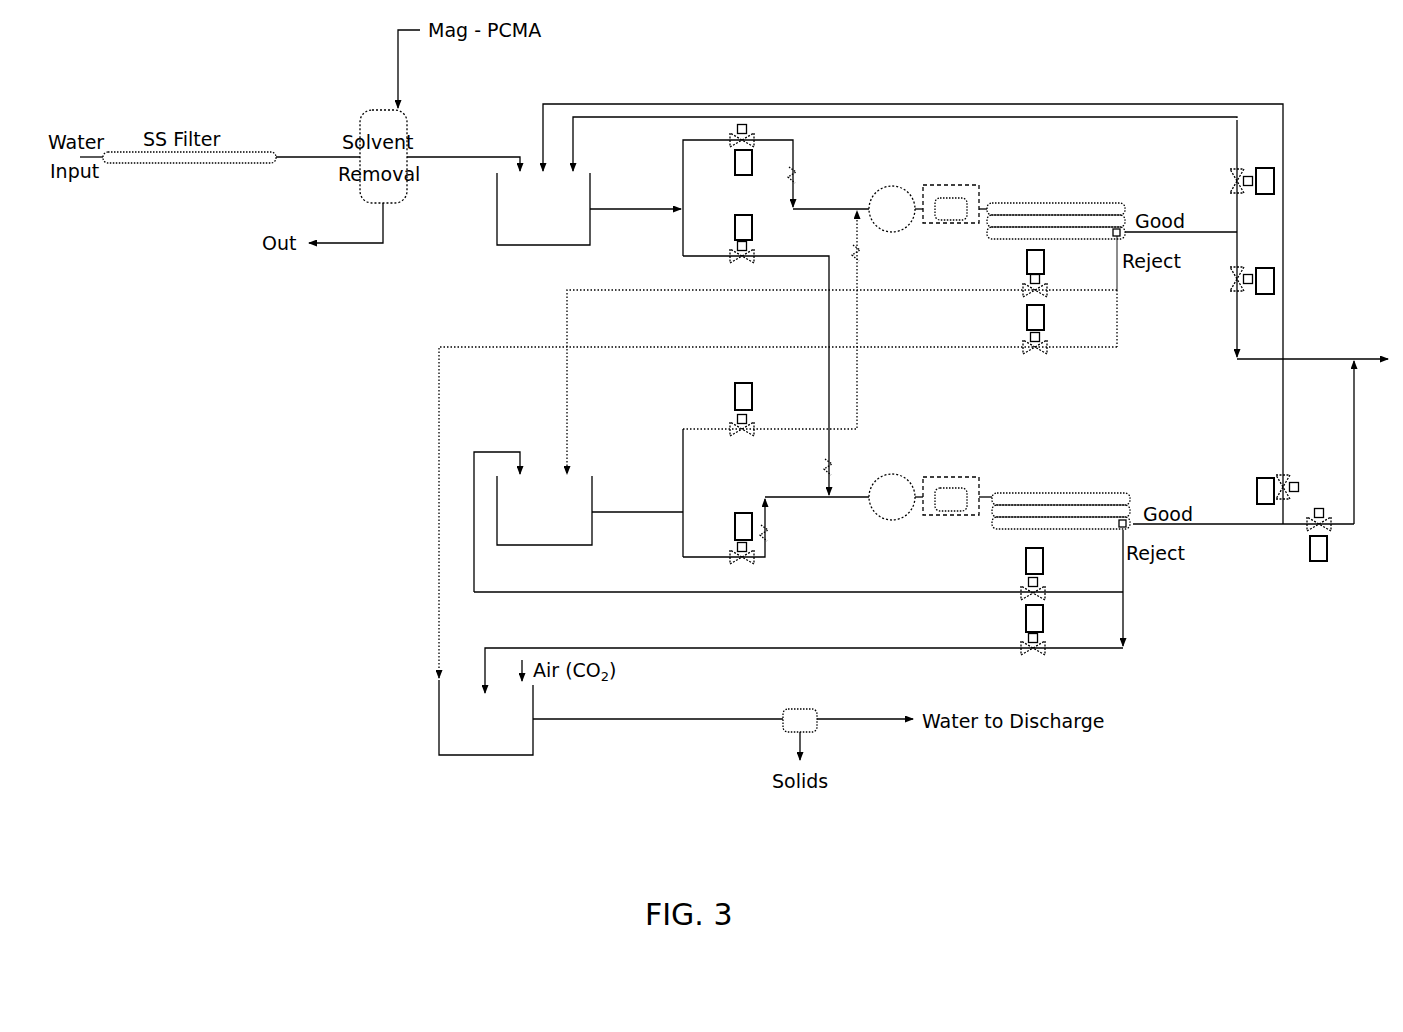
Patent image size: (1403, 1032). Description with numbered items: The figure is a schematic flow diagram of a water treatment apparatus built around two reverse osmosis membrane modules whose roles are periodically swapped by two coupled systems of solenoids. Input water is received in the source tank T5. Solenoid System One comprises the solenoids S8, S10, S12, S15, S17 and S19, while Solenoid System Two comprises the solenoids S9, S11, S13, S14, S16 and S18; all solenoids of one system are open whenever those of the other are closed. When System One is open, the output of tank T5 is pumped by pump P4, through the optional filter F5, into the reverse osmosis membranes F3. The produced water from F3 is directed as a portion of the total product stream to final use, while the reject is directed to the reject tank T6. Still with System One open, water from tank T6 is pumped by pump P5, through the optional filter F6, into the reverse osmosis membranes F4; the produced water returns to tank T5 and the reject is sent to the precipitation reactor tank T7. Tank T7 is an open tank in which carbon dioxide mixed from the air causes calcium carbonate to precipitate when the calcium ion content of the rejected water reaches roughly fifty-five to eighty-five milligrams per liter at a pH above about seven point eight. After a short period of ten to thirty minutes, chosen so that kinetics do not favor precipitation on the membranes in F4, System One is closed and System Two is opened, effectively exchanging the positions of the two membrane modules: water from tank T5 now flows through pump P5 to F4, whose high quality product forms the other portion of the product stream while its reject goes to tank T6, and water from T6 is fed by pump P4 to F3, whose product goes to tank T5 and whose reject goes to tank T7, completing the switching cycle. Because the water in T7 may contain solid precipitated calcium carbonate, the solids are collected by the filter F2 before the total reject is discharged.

The tank T5 is at (497, 223).
The tank T6 is at (593, 487).
The tank T7 is at (439, 710).
The pump P4 is at (893, 186).
The pump P5 is at (882, 519).
The filter F2 is at (783, 730).
The reverse osmosis membranes F3 is at (1117, 203).
The reverse osmosis membranes F4 is at (1125, 493).
The filter F5 is at (953, 198).
The filter F6 is at (950, 488).
The solenoid S8 is at (752, 158).
The solenoid S9 is at (735, 253).
The solenoid S10 is at (750, 435).
The solenoid S11 is at (742, 563).
The solenoid S12 is at (1030, 280).
The solenoid S13 is at (1030, 338).
The solenoid S14 is at (1028, 584).
The solenoid S15 is at (1028, 640).
The solenoid S16 is at (1232, 180).
The solenoid S17 is at (1232, 288).
The solenoid S18 is at (1287, 480).
The solenoid S19 is at (1319, 508).